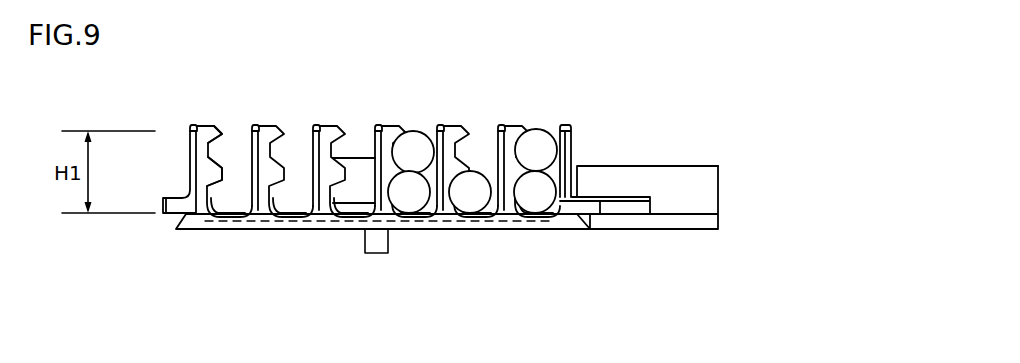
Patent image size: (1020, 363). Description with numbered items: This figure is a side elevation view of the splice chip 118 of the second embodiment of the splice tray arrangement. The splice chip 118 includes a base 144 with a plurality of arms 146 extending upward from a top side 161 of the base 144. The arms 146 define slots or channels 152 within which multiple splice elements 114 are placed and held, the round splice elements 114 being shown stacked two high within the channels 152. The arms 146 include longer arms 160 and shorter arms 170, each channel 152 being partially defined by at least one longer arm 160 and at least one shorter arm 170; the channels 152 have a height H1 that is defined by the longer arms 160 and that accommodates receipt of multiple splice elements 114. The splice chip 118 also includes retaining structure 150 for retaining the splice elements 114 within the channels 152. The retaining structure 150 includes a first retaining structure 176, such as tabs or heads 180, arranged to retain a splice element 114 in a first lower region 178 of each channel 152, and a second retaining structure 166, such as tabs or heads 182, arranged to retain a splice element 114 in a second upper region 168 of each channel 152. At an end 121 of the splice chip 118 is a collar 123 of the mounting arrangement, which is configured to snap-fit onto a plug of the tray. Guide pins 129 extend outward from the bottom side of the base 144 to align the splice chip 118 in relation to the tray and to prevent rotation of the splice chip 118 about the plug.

The splice element 114 is at (475, 214).
The splice chip 118 is at (557, 83).
The end 121 is at (738, 196).
The collar 123 is at (670, 167).
The guide pin 129 is at (365, 248).
The base 144 is at (512, 221).
The arm 146 is at (383, 127).
The retaining structure 150 is at (318, 124).
The channel 152 is at (413, 207).
The longer arm 160 is at (203, 127).
The top side 161 is at (292, 213).
The second retaining structure 166 is at (397, 127).
The second upper region 168 is at (355, 148).
The shorter arm 170 is at (199, 214).
The first retaining structure 176 is at (457, 170).
The first lower region 178 is at (354, 193).
The head 180 is at (217, 165).
The head 182 is at (208, 130).